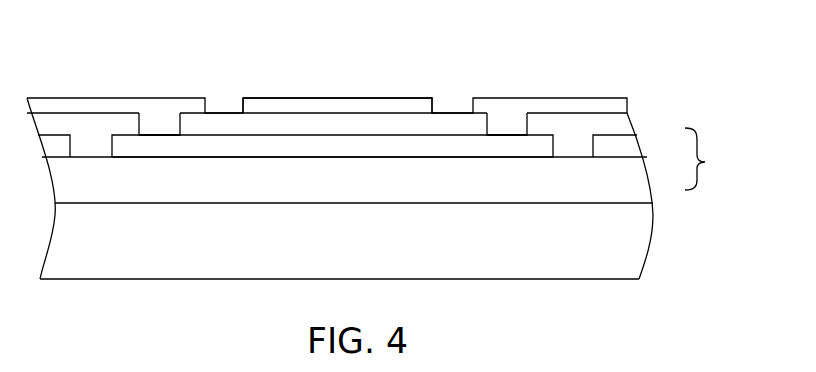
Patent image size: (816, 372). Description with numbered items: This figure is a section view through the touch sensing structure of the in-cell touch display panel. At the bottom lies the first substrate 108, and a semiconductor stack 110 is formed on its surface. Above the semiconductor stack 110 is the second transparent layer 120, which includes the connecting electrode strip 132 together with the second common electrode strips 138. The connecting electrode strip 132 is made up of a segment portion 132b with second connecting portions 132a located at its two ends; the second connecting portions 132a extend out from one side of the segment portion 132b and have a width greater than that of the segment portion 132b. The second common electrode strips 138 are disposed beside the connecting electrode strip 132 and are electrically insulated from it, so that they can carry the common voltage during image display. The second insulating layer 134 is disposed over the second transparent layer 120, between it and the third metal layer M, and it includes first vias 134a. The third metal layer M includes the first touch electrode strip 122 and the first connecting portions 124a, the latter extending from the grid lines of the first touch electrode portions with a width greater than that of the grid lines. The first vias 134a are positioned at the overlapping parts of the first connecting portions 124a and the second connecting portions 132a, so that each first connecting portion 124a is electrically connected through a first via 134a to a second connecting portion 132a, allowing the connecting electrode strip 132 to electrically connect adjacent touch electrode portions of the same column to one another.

The first substrate 108 is at (503, 252).
The semiconductor stack 110 is at (432, 193).
The second transparent layer 120 is at (705, 162).
The first touch electrode strip 122 is at (343, 107).
The first connecting portion 124a is at (149, 108).
The connecting electrode strip 132 is at (537, 158).
The second connecting portion 132a is at (157, 148).
The segment portion 132b is at (323, 148).
The second insulating layer 134 is at (582, 127).
The first via 134a is at (165, 108).
The second common electrode strip 138 is at (627, 142).